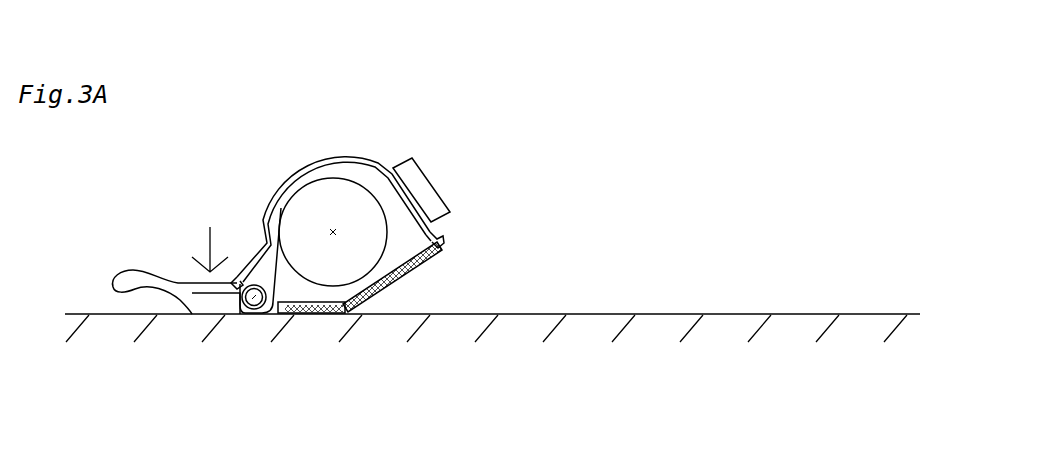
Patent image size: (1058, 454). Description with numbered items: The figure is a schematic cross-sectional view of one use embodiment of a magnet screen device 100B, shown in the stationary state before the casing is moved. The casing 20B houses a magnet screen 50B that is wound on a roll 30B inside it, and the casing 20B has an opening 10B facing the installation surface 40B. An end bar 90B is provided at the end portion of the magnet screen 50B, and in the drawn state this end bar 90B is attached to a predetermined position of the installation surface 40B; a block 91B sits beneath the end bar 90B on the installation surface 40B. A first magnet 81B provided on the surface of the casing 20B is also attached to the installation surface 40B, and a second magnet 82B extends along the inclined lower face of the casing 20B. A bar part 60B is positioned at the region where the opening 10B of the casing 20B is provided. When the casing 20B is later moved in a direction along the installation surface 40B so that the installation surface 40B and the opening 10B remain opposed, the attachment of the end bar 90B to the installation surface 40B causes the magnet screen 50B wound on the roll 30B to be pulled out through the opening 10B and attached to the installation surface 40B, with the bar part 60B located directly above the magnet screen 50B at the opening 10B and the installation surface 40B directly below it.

The cleaning device 100B is at (542, 241).
The opening 10B is at (277, 302).
The casing 20B is at (373, 162).
The roller 30B is at (317, 210).
The installation surface 40B is at (520, 330).
The magnet screen 50B is at (243, 277).
The bar part 60B is at (244, 302).
The first magnet 81B is at (305, 308).
The second pad 82B is at (383, 292).
The end bar 90B is at (177, 302).
The block 91B is at (200, 303).